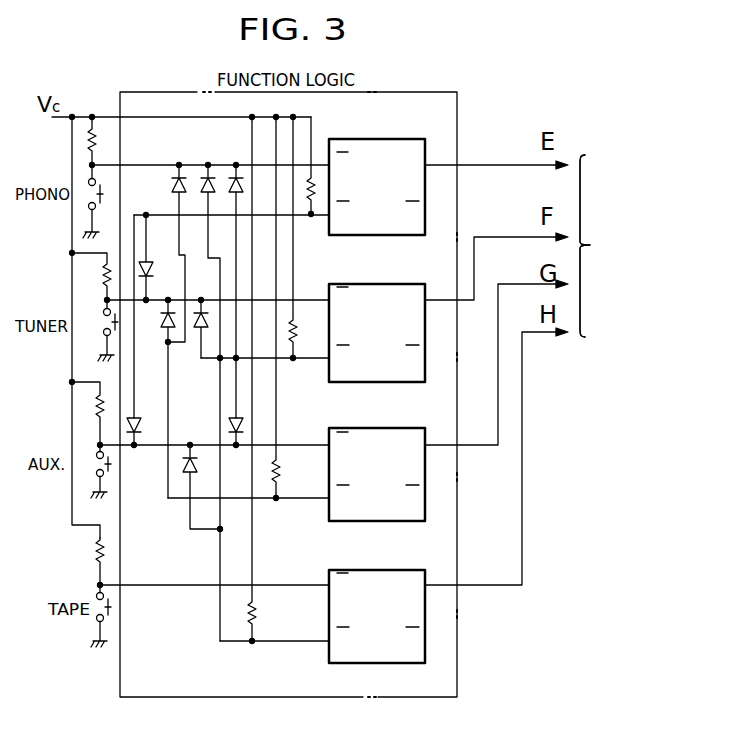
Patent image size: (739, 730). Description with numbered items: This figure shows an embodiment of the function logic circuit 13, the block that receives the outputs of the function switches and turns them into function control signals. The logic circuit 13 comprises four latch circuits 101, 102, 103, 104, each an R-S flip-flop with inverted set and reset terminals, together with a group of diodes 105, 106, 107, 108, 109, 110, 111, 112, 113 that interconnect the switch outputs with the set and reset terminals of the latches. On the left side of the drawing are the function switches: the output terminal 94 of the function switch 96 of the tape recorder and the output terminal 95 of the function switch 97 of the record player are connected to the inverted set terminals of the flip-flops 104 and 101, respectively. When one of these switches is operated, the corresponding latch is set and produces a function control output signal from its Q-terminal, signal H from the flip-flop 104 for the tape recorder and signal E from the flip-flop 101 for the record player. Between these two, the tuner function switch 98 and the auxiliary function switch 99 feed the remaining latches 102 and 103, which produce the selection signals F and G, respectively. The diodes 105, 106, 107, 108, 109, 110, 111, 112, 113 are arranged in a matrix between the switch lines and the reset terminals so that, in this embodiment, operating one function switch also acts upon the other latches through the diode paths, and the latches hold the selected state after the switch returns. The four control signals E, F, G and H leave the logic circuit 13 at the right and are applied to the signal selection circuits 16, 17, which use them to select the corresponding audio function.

The function logic circuit 13 is at (458, 626).
The signal selection circuit 16 is at (617, 246).
The selection circuit 17 is at (635, 246).
The output terminal 94 is at (103, 583).
The output terminal 95 is at (88, 138).
The function switch 96 is at (112, 612).
The function switch 97 is at (88, 192).
The tuner function switch 98 is at (102, 320).
The auxiliary function switch 99 is at (96, 462).
The latch circuit 101 is at (360, 139).
The latch circuit 102 is at (368, 284).
The latch circuit 103 is at (377, 407).
The latch circuit 104 is at (376, 570).
The diode 105 is at (173, 188).
The diode 106 is at (202, 188).
The diode 107 is at (231, 188).
The diode 108 is at (155, 273).
The diode 109 is at (175, 322).
The diode 110 is at (207, 322).
The diode 111 is at (141, 428).
The diode 112 is at (183, 465).
The diode 113 is at (243, 425).